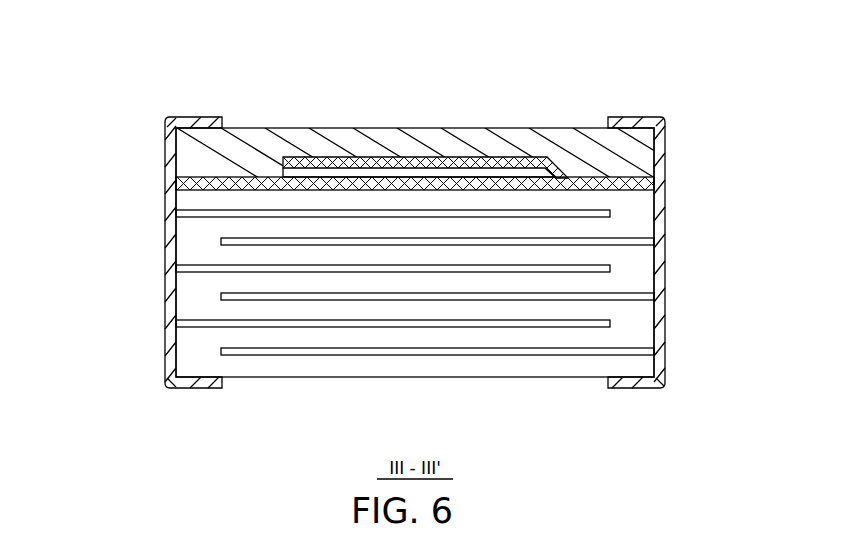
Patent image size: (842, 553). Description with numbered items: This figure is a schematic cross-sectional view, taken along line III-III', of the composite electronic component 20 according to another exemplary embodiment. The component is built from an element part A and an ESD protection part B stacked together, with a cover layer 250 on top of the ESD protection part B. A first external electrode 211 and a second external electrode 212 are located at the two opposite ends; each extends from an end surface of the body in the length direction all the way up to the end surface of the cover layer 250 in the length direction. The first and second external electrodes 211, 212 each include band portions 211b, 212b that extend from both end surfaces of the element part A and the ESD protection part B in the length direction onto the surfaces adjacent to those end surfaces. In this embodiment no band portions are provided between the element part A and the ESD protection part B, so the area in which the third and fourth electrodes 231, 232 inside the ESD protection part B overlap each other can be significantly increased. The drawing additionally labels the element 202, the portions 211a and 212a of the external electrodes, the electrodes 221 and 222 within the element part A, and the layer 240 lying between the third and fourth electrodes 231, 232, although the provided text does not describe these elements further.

The composite electronic component 20 is at (429, 42).
The ceramic body 202 is at (374, 337).
The first external electrode 211 is at (123, 244).
The side portion of first external electrode 211a is at (170, 262).
The band portion 211b is at (78, 267).
The second external electrode 212 is at (704, 244).
The side portion of second external electrode 212a is at (658, 260).
The band portion 212b is at (752, 267).
The first internal electrode 221 is at (243, 327).
The second internal electrode 222 is at (320, 355).
The third electrode 231 is at (262, 177).
The fourth electrode 232 is at (480, 157).
The insulating layer 240 is at (396, 171).
The cover layer 250 is at (582, 143).
The element part A is at (677, 190).
The ESD protection part B is at (677, 128).